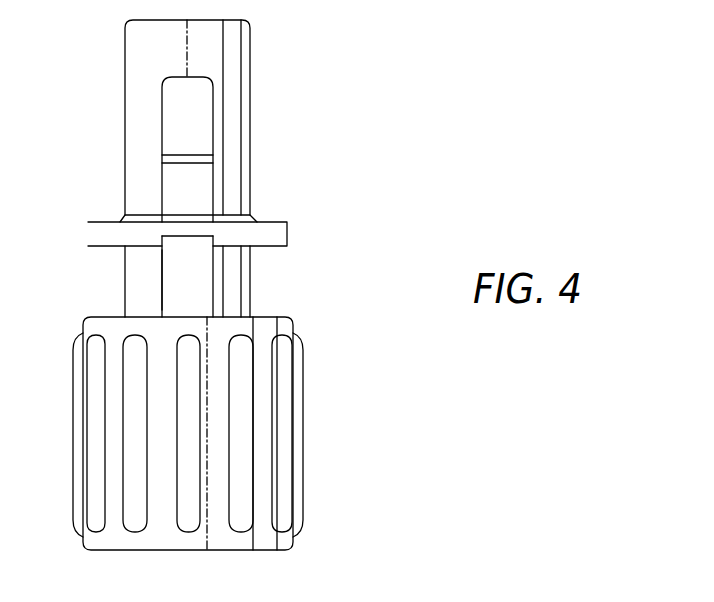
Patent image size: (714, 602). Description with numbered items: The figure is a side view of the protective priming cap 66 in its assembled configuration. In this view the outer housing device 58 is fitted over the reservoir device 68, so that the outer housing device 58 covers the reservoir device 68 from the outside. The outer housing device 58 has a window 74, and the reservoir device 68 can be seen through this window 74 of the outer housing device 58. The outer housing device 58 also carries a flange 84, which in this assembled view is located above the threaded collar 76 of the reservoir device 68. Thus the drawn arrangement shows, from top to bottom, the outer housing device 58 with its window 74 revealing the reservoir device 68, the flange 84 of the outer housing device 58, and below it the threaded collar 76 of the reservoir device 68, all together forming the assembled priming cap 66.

The priming cap 66 is at (553, 144).
The outer housing device 58 is at (250, 58).
The reservoir device 68 is at (193, 190).
The flange 84 is at (287, 230).
The window 74 is at (163, 263).
The threaded collar 76 is at (292, 329).